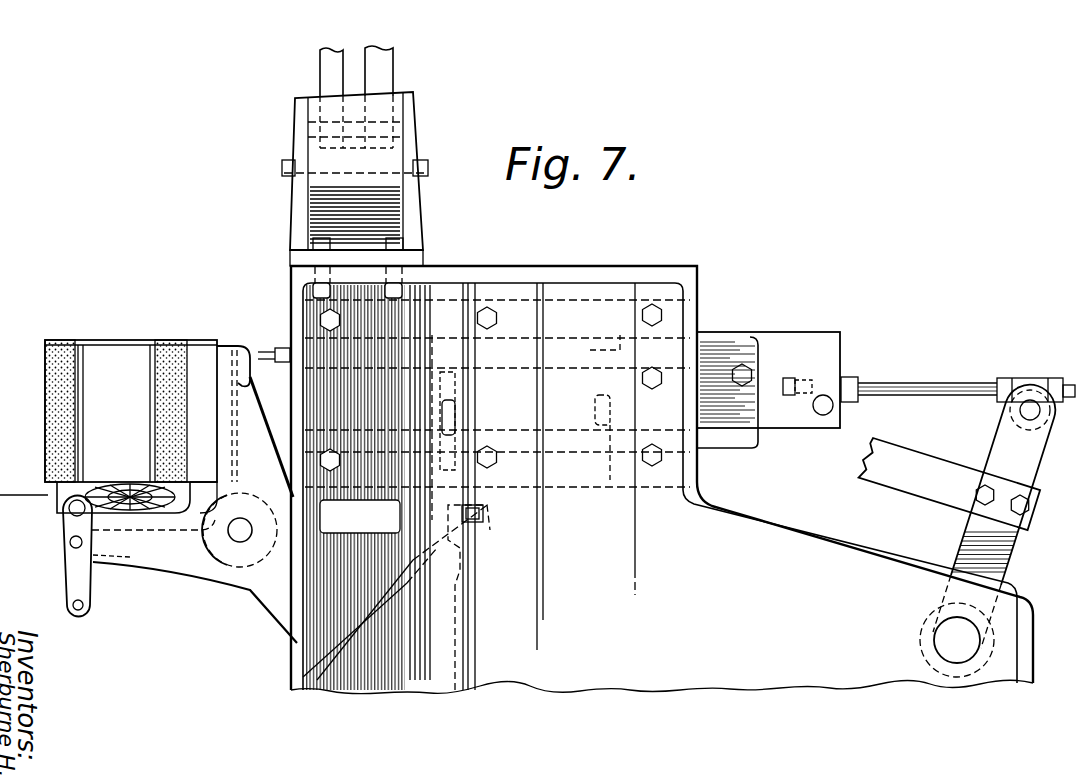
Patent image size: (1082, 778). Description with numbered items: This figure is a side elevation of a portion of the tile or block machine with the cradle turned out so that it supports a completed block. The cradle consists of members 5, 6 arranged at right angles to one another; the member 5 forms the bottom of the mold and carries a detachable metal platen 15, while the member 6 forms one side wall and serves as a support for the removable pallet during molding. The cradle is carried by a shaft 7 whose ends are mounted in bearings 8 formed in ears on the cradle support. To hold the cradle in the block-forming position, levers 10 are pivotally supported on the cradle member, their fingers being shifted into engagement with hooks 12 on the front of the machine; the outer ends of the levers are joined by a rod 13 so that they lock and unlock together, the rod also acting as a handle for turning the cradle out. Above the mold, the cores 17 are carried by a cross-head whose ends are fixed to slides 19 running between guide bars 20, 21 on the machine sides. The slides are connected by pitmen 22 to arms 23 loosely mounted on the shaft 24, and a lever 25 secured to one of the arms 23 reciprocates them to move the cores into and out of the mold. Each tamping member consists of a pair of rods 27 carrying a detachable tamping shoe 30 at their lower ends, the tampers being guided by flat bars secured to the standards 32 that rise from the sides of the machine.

The cradle member 5 is at (245, 410).
The cradle member 6 is at (153, 560).
The shaft 7 is at (240, 540).
The bearings 8 is at (215, 543).
The levers 10 is at (72, 570).
The hooks 12 is at (247, 352).
The rod 13 is at (86, 607).
The platen 15 is at (193, 350).
The cores 17 is at (522, 455).
The slides 19 is at (797, 348).
The guide bar 20 is at (610, 297).
The guide bar 21 is at (597, 487).
The pitmen 22 is at (948, 388).
The arms 23 is at (1026, 468).
The shaft 24 is at (955, 645).
The lever 25 is at (914, 470).
The rods 27 is at (375, 65).
The tamping shoe 30 is at (320, 162).
The standards 32 is at (300, 204).